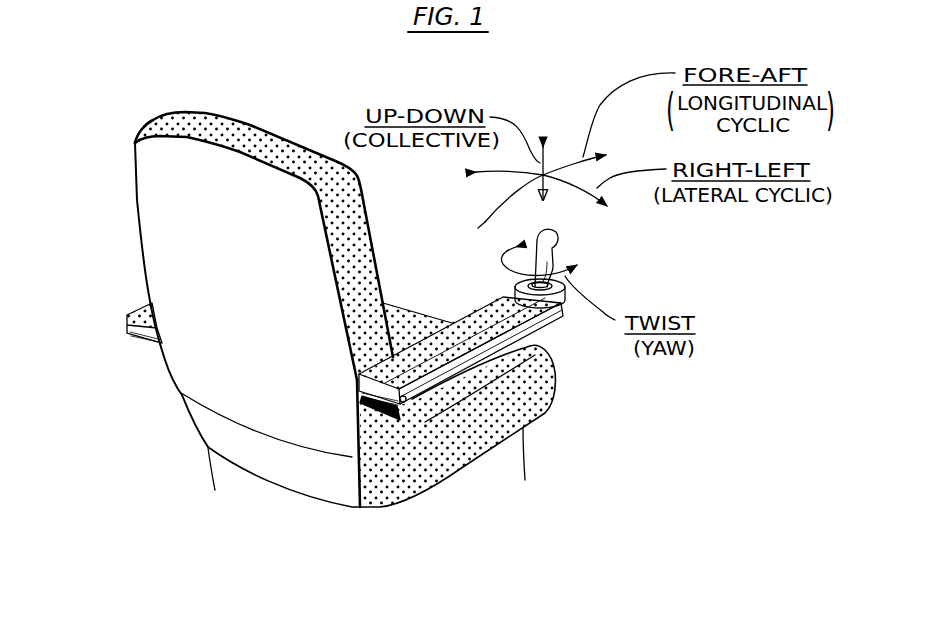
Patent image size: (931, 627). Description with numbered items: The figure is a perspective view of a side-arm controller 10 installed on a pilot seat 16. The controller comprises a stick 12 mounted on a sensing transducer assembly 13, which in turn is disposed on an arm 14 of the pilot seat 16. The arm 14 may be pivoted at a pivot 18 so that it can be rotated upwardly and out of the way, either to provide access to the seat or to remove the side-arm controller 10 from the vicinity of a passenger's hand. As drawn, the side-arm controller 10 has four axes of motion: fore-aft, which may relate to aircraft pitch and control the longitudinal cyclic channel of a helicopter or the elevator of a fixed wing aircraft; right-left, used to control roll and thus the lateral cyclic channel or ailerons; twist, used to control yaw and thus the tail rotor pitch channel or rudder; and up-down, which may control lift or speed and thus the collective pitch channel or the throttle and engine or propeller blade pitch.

The side-arm controller 10 is at (490, 340).
The stick 12 is at (556, 241).
The sensing transducer assembly 13 is at (517, 283).
The arm 14 is at (543, 320).
The pilot seat 16 is at (556, 410).
The pivot 18 is at (408, 402).